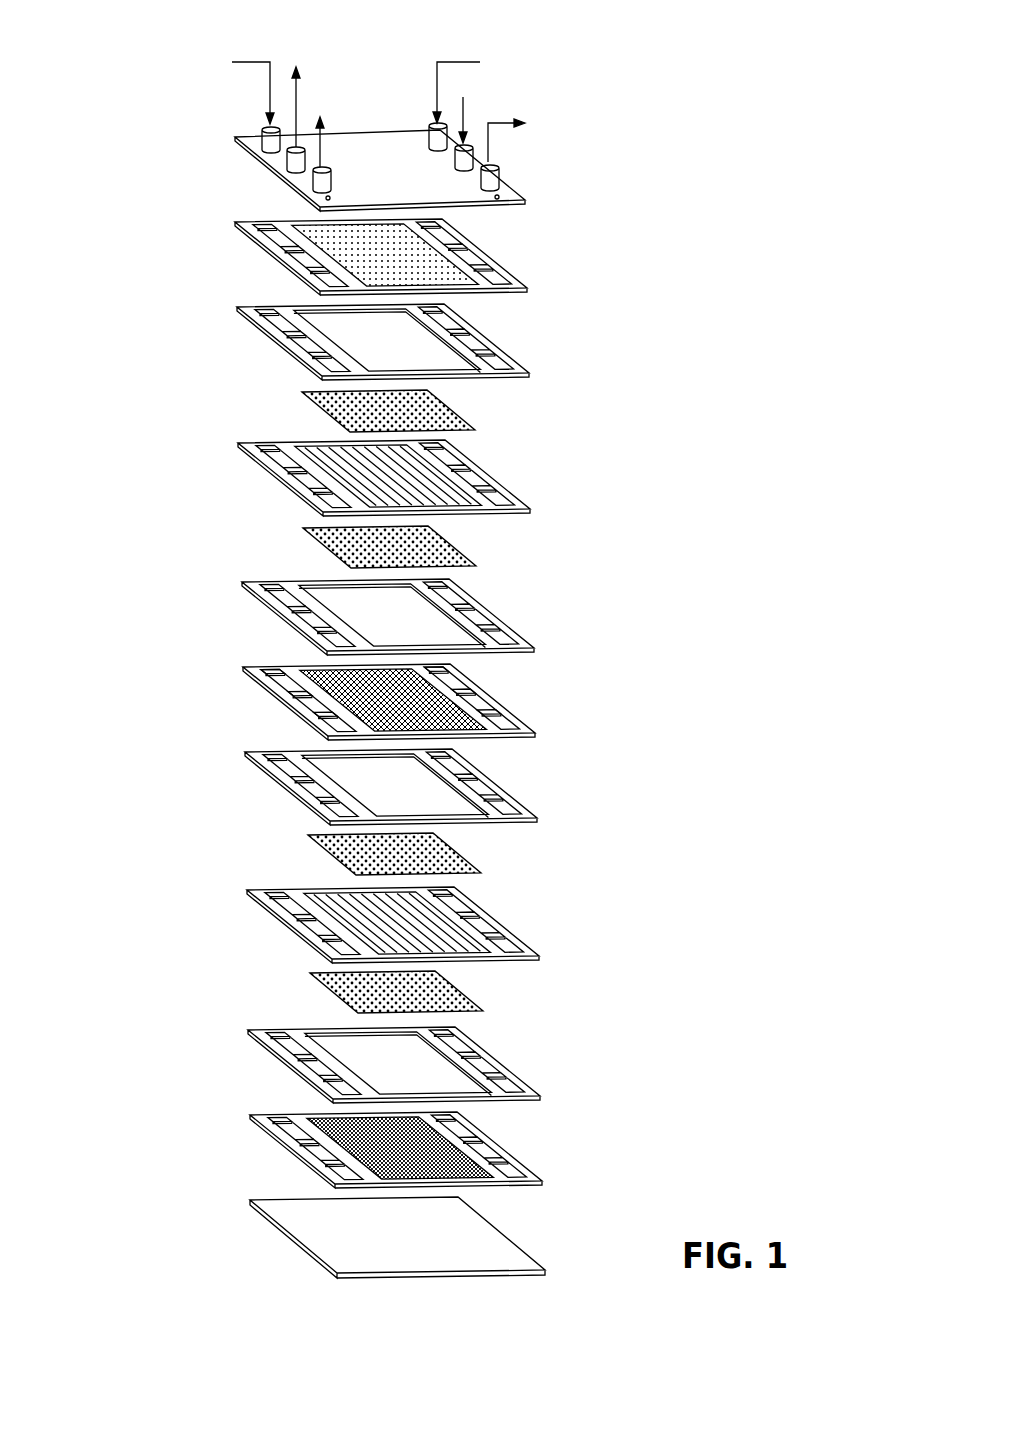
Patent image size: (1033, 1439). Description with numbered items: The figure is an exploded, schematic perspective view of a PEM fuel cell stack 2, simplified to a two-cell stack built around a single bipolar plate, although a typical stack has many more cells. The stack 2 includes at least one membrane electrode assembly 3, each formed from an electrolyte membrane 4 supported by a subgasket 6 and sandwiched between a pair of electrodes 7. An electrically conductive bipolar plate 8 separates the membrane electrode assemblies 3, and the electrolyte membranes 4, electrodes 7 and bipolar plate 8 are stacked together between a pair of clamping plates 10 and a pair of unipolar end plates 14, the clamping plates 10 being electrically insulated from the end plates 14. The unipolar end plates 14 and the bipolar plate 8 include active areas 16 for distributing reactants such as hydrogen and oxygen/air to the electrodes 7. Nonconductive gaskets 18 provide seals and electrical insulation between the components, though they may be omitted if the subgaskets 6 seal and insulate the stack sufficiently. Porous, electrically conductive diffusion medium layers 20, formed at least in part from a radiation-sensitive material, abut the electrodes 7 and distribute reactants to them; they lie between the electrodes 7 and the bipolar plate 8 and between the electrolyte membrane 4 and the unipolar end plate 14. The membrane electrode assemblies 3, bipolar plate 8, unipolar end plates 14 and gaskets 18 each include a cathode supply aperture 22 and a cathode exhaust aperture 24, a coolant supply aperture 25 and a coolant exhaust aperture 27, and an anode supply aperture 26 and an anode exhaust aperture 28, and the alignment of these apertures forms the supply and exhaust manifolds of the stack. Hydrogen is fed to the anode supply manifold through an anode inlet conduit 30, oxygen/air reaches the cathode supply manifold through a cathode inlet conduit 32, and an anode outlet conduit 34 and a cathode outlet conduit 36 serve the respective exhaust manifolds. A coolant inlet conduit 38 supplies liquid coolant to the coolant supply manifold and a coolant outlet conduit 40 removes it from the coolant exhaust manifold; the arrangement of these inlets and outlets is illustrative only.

The fuel cell stack 2 is at (613, 50).
The membrane electrode assembly 3 is at (371, 690).
The electrolyte membrane 4 is at (290, 437).
The subgasket 6 is at (462, 483).
The electrodes 7 is at (436, 473).
The bipolar plate 8 is at (262, 688).
The clamping plates 10 is at (267, 172).
The unipolar end plates 14 is at (268, 254).
The active areas 16 is at (478, 296).
The gaskets 18 is at (282, 316).
The diffusion medium layer 20 is at (330, 413).
The cathode supply aperture 22 is at (273, 675).
The cathode exhaust aperture 24 is at (505, 720).
The coolant supply aperture 25 is at (480, 700).
The anode supply aperture 26 is at (450, 670).
The coolant exhaust aperture 27 is at (327, 732).
The anode exhaust aperture 28 is at (323, 733).
The anode inlet conduit 30 is at (430, 140).
The cathode inlet conduit 32 is at (258, 137).
The anode outlet conduit 34 is at (313, 181).
The cathode outlet conduit 36 is at (500, 180).
The coolant inlet conduit 38 is at (477, 150).
The coolant outlet conduit 40 is at (288, 160).